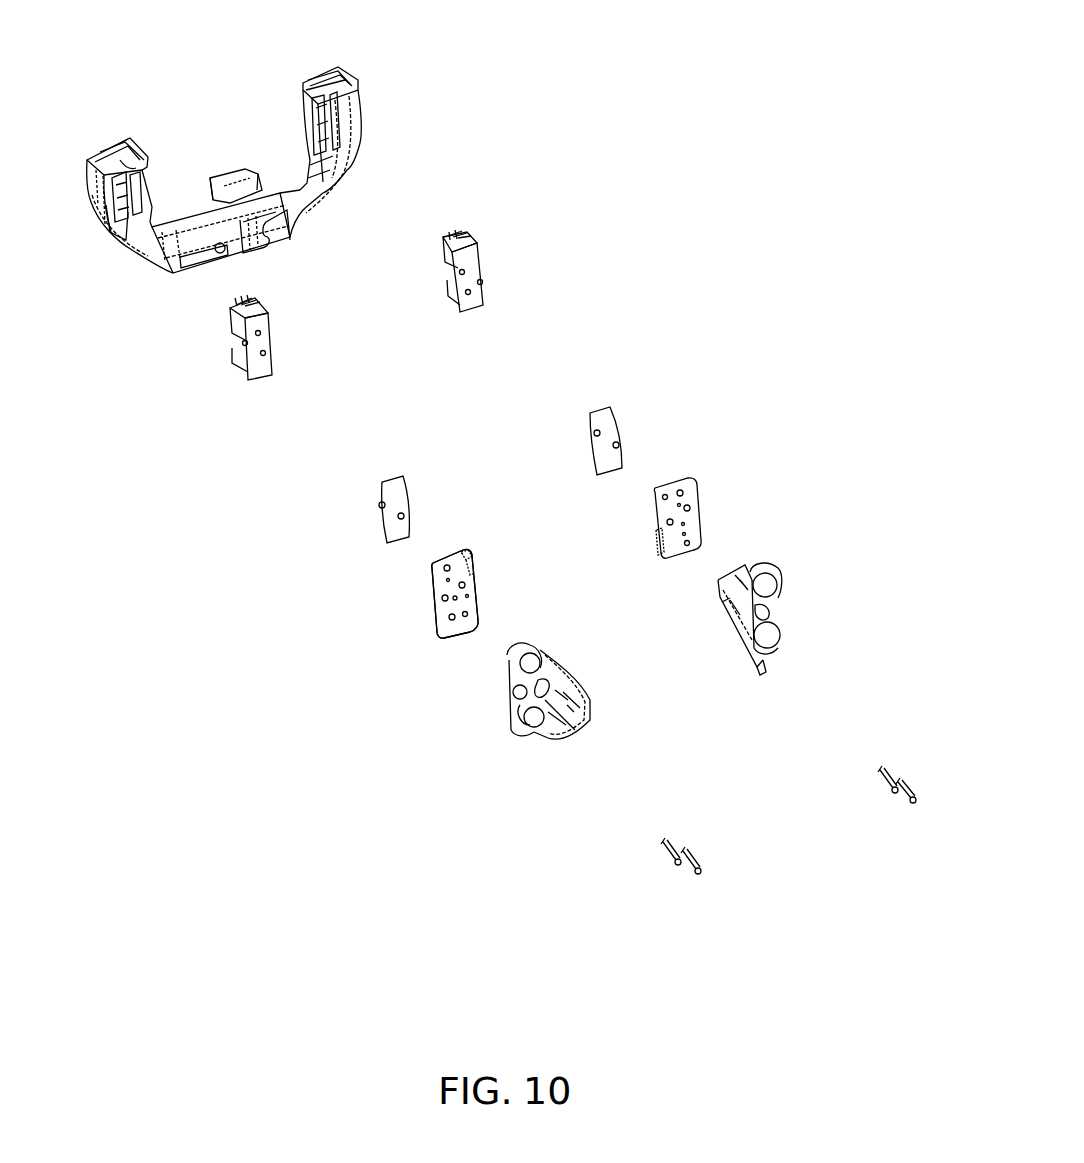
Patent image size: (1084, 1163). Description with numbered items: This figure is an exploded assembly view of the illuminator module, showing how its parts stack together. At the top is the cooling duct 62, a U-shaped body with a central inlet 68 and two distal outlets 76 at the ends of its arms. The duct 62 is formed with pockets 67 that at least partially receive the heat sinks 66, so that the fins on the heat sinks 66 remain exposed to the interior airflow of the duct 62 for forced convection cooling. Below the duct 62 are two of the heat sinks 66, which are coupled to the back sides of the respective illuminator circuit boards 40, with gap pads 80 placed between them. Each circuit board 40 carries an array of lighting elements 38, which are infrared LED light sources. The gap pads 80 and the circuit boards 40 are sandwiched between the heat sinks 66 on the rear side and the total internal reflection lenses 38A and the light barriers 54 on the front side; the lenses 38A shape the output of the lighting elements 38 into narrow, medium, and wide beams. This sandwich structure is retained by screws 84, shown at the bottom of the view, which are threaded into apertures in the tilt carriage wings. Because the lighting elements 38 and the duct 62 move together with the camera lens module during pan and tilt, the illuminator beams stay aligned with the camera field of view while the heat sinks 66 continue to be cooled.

The cooling duct 62 is at (237, 167).
The distal outlets 76 is at (110, 143).
The central inlet 68 is at (237, 165).
The pockets 67 is at (127, 213).
The heat sinks 66 is at (212, 368).
The gap pads 80 is at (352, 522).
The illuminator circuit boards 40 is at (410, 603).
The lighting elements 38 is at (453, 625).
The total internal reflection lenses 38A is at (530, 663).
The light barriers 54 is at (572, 722).
The screws 84 is at (898, 748).